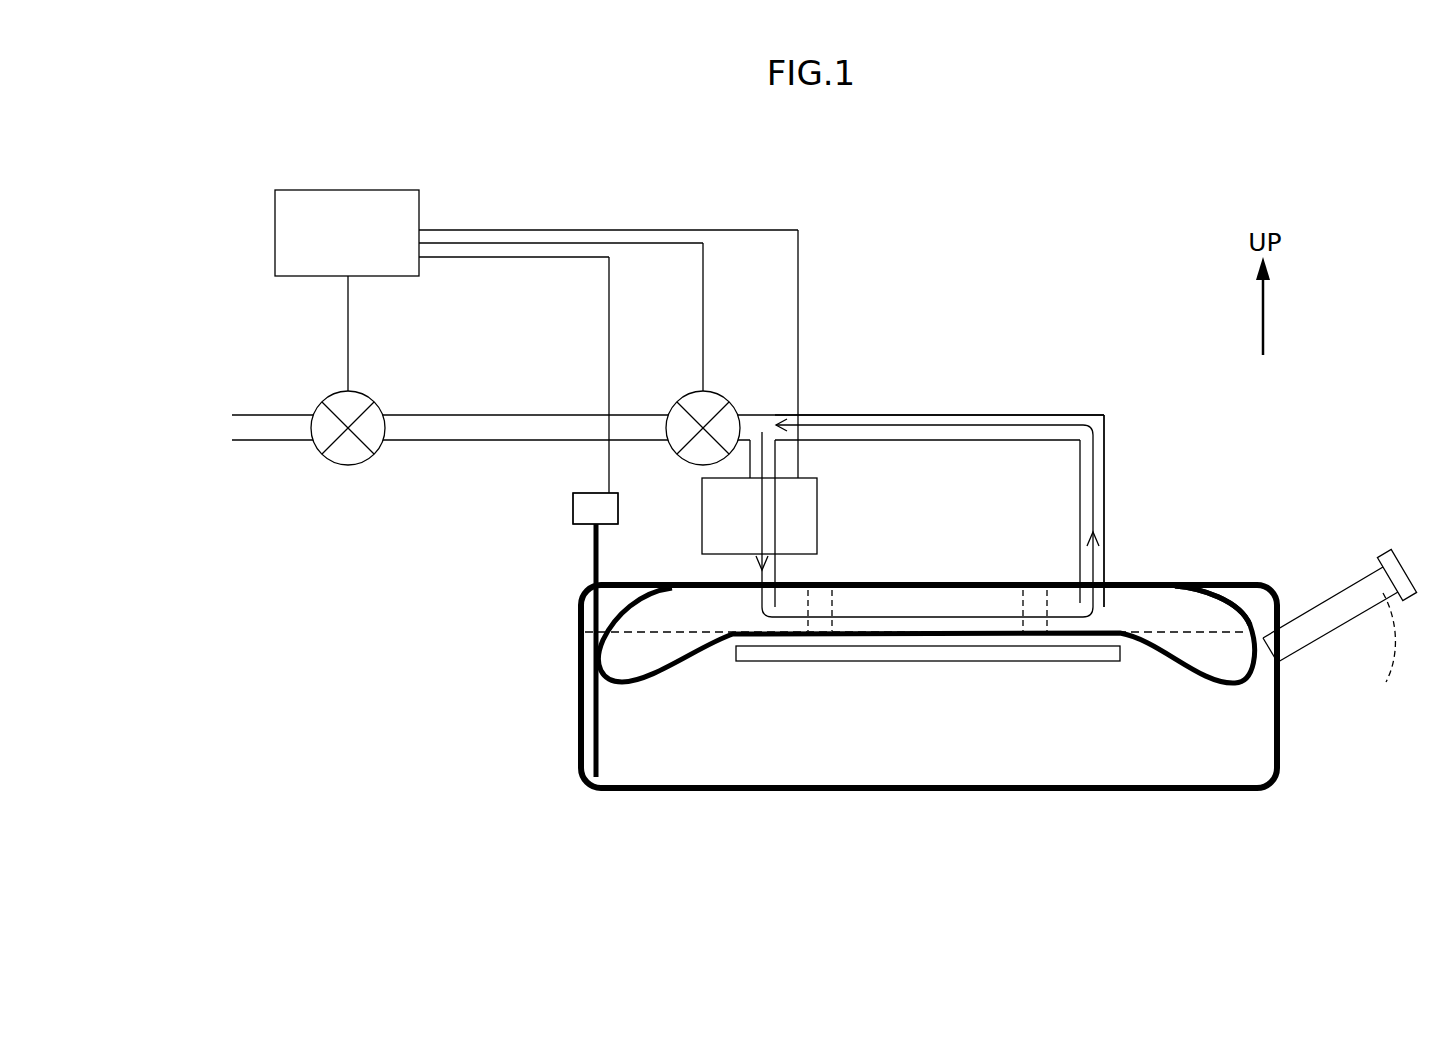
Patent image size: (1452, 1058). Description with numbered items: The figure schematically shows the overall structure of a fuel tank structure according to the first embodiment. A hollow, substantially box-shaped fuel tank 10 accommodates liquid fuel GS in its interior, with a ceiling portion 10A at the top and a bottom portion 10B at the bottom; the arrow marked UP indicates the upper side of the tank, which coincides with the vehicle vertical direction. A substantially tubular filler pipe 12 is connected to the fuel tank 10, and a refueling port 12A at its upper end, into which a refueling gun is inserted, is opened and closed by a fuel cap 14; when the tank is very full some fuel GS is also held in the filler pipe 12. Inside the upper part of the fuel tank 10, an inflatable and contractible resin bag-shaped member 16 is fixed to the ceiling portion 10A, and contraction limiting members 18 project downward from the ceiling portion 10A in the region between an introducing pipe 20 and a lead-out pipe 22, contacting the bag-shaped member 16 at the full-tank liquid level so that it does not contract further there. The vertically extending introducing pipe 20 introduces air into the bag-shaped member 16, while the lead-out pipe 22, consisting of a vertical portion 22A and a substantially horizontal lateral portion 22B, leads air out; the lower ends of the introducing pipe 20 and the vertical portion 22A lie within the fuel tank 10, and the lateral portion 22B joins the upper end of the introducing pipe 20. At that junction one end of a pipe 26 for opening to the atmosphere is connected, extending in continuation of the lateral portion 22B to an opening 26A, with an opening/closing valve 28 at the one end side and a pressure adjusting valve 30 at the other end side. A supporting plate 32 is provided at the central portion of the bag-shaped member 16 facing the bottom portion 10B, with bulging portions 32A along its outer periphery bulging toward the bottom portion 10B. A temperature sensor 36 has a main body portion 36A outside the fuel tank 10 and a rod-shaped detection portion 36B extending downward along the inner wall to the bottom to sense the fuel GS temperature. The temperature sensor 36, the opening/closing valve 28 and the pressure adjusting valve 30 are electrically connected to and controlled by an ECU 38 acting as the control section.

The fuel tank 10 is at (1043, 796).
The ceiling portion 10A is at (905, 594).
The bottom portion 10B is at (1150, 787).
The filler pipe 12 is at (1340, 588).
The refueling port 12A is at (1378, 652).
The fuel cap 14 is at (1410, 540).
The bag-shaped member 16 is at (1242, 592).
The contraction limiting members 18 is at (836, 597).
The introducing pipe 20 is at (776, 465).
The lead-out pipe 22 is at (1110, 453).
The vertical portion 22A is at (1108, 512).
The lateral portion 22B is at (975, 413).
The pipe for opening to the atmosphere 26 is at (492, 413).
The opening 26A is at (233, 434).
The opening/closing valve 28 is at (712, 392).
The pressure adjusting valve 30 is at (362, 462).
The supporting plate 32 is at (862, 662).
The bulging portions 32A is at (990, 662).
The temperature sensor 36 is at (571, 508).
The main body portion 36A is at (618, 511).
The detection portion 36B is at (583, 683).
The ECU 38 is at (358, 190).
The fuel GS is at (1248, 740).